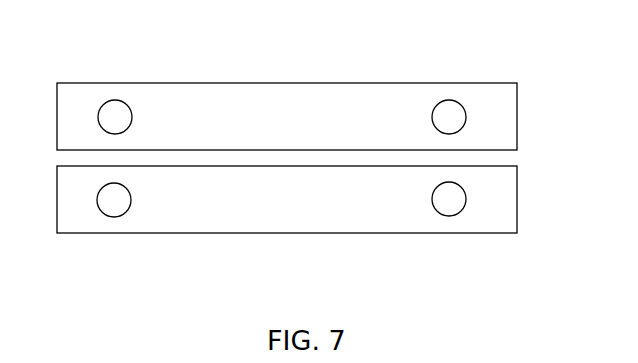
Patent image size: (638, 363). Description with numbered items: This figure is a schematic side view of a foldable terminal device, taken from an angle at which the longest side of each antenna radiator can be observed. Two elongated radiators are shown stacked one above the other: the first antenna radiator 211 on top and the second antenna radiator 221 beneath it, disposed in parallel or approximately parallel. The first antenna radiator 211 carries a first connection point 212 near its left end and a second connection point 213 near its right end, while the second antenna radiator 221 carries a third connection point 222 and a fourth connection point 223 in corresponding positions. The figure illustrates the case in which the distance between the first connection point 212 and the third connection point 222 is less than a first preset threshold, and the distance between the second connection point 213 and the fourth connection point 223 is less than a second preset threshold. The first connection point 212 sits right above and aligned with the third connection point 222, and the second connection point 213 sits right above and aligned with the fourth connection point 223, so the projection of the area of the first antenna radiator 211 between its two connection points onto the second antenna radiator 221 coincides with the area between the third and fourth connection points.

The first antenna radiator 211 is at (282, 83).
The first connection point 212 is at (121, 101).
The second connection point 213 is at (447, 100).
The second antenna radiator 221 is at (265, 233).
The third connection point 222 is at (113, 217).
The fourth connection point 223 is at (447, 216).